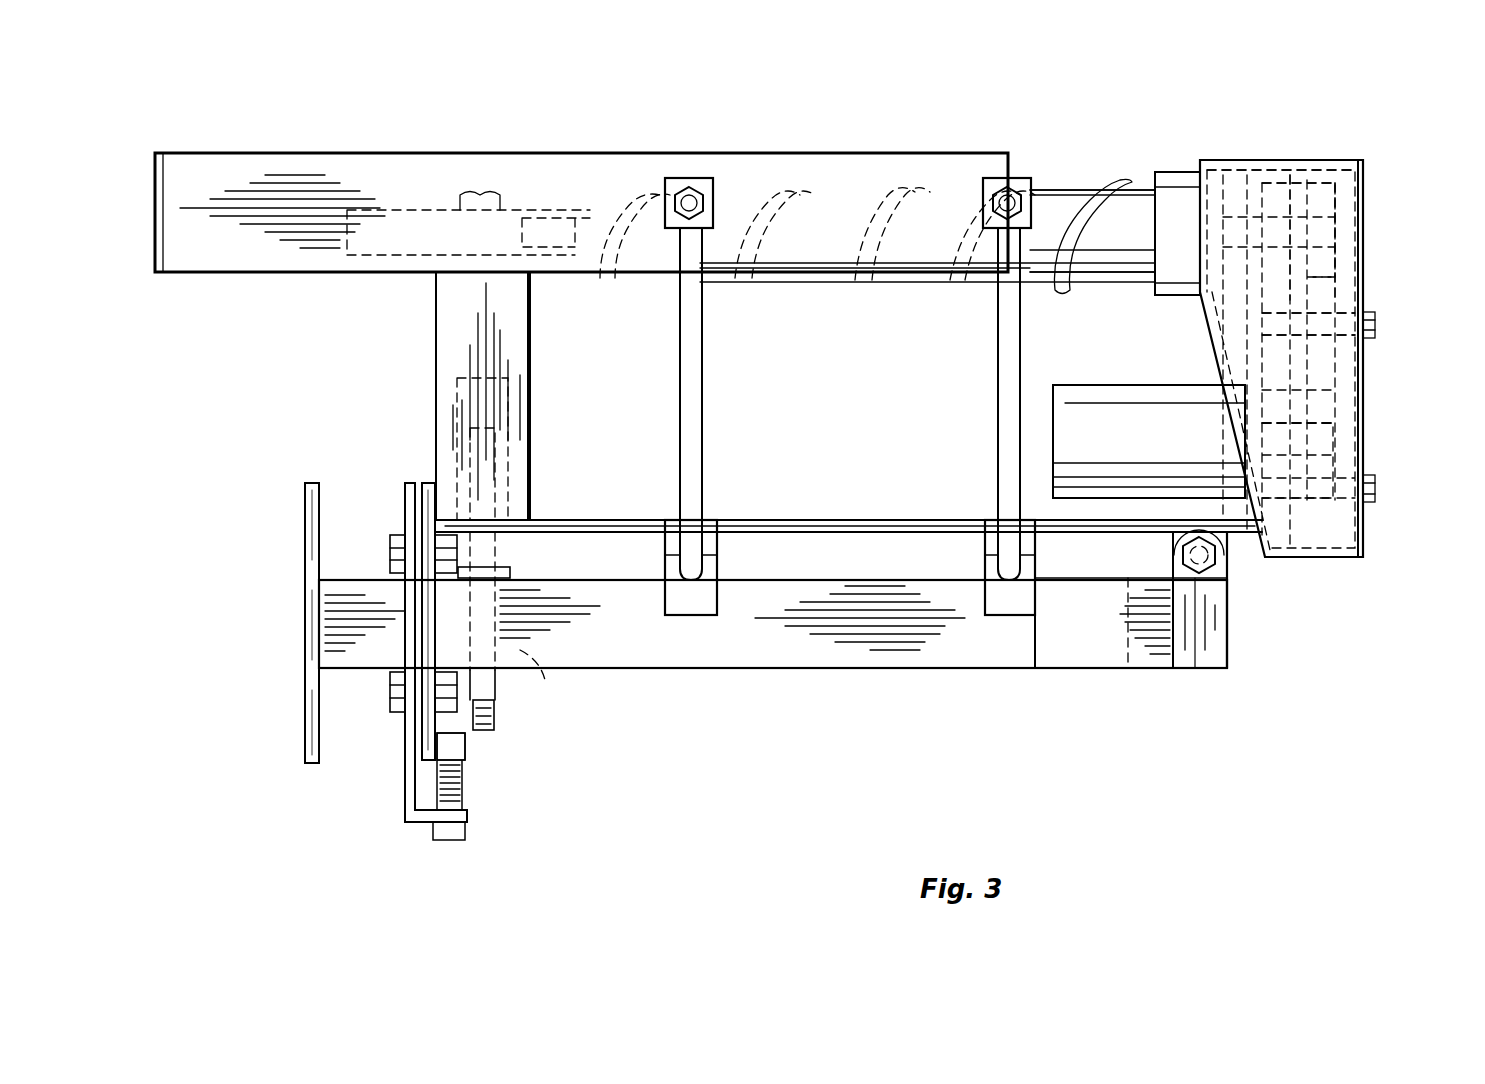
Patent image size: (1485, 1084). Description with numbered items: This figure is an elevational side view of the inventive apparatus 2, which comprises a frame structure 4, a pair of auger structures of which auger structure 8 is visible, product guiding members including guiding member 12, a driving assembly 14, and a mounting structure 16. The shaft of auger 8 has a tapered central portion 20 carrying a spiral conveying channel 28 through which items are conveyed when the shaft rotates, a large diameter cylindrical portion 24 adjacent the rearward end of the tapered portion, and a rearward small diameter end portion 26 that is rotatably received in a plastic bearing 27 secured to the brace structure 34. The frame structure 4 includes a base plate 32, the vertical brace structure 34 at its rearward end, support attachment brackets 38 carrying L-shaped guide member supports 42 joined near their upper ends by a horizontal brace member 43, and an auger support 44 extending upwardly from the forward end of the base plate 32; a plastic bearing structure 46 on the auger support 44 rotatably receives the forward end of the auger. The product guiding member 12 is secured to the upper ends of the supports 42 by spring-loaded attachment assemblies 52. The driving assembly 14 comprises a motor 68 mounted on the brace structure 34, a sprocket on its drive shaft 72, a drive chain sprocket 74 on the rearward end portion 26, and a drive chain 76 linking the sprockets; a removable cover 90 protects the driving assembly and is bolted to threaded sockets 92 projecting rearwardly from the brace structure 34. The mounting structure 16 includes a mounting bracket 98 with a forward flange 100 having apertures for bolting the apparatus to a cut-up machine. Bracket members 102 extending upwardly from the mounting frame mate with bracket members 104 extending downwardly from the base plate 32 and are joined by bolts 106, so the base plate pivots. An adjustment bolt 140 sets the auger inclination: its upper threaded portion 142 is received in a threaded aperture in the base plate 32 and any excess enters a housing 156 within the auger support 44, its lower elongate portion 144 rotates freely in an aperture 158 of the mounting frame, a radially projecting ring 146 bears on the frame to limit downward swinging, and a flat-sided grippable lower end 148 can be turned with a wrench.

The inventive apparatus 2 is at (901, 141).
The frame structure 4 is at (1235, 560).
The auger structure 8 is at (1083, 190).
The product guiding member 12 is at (240, 240).
The driving assembly 14 is at (1382, 260).
The mounting structure 16 is at (305, 635).
The tapered central portion 20 is at (1092, 231).
The large diameter cylindrical portion 24 is at (1178, 295).
The rearward small diameter cylindrical end portion 26 is at (1345, 195).
The plastic bearing 27 is at (1335, 180).
The spiral conveying channel 28 is at (848, 195).
The base plate 32 is at (828, 520).
The brace structure 34 is at (1298, 402).
The support attachment bracket 38 is at (675, 615).
The L-shaped guide member support 42 is at (680, 352).
The brace member 43 is at (795, 272).
The auger support 44 is at (450, 335).
The bearing structure 46 is at (398, 215).
The spring-loaded attachment assembly 52 is at (690, 178).
The motor 68 is at (1085, 400).
The drive shaft 72 is at (1320, 450).
The drive chain sprocket 74 is at (1300, 160).
The drive chain 76 is at (1295, 360).
The removable cover 90 is at (1365, 530).
The internally threaded socket 92 is at (1330, 300).
The second mounting bracket 98 is at (362, 668).
The forward flange 100 is at (305, 520).
The bracket member 102 is at (1222, 592).
The bracket member 104 is at (1175, 533).
The bolt 106 is at (1195, 585).
The adjustment bolt 140 is at (498, 690).
The upper threaded portion 142 is at (498, 535).
The lower elongate portion 144 is at (496, 712).
The radially projecting ring 146 is at (510, 572).
The grippable lower end 148 is at (487, 735).
The housing 156 is at (510, 410).
The aperture 158 is at (520, 680).